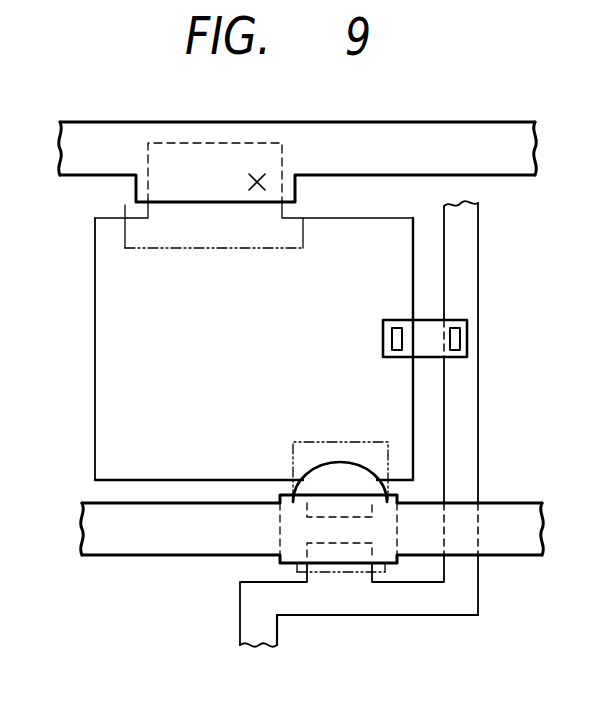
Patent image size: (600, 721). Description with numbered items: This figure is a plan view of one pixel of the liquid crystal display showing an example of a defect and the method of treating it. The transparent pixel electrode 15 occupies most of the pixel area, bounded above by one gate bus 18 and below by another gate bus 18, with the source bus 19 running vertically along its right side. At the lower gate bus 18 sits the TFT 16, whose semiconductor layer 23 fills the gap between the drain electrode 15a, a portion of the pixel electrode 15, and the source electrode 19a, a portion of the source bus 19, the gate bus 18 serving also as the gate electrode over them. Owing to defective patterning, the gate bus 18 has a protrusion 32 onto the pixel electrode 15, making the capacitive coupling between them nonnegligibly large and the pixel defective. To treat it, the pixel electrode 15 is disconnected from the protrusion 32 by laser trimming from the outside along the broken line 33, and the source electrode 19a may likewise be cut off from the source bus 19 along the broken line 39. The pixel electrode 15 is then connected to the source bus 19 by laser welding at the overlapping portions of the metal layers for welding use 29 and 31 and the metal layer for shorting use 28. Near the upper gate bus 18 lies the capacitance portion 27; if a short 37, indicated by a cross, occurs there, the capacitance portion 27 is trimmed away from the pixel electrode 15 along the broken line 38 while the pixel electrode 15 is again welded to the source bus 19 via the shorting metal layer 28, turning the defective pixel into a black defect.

The pixel electrode 15 is at (115, 340).
The drain electrode 15a is at (333, 487).
The TFT 16 is at (329, 526).
The gate bus 18 is at (502, 120).
The source bus 19 is at (468, 377).
The source electrode 19a is at (347, 545).
The semiconductor layer 23 is at (390, 563).
The capacitance portion 27 is at (165, 184).
The metal layer for shorting use 28 is at (423, 322).
The metal layer for welding use 29 is at (395, 328).
The metal layer for welding use 31 is at (467, 333).
The protrusion 32 is at (360, 470).
The broken line 33 is at (293, 442).
The short 37 is at (258, 192).
The broken line 38 is at (305, 248).
The broken line 39 is at (325, 572).